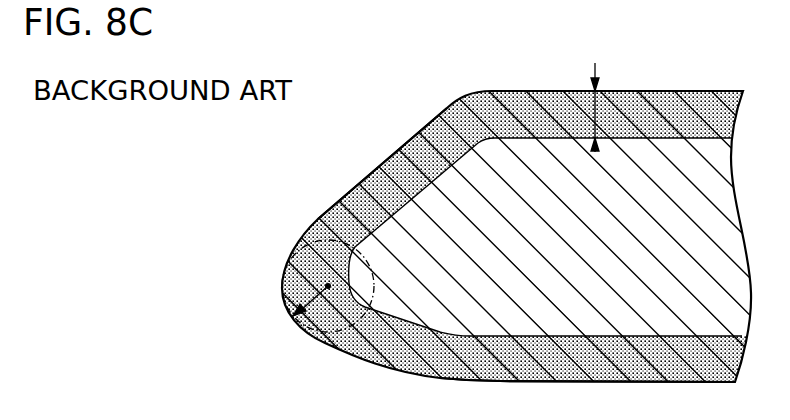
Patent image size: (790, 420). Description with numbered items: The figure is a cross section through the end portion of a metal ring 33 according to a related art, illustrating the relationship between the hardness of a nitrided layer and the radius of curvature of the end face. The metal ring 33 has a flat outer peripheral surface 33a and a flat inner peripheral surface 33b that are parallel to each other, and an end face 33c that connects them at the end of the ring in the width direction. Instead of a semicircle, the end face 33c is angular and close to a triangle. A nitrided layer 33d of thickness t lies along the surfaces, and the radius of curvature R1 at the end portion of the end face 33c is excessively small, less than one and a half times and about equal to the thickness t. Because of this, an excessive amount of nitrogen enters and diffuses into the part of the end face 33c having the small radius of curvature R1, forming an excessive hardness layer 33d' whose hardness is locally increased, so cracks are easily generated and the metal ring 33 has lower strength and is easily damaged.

The metal ring 33 is at (718, 92).
The outer peripheral surface 33a is at (674, 91).
The inner peripheral surface 33b is at (553, 382).
The end face 33c is at (388, 150).
The nitrided layer 33d is at (530, 131).
The excessive hardness layer 33d' is at (302, 279).
The thickness of the nitrided layer t is at (597, 110).
The radius of curvature R1 is at (322, 322).